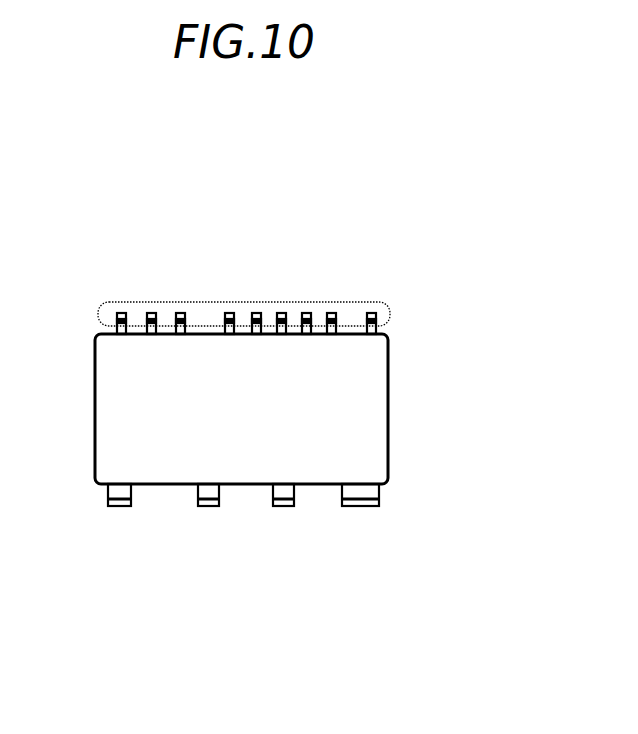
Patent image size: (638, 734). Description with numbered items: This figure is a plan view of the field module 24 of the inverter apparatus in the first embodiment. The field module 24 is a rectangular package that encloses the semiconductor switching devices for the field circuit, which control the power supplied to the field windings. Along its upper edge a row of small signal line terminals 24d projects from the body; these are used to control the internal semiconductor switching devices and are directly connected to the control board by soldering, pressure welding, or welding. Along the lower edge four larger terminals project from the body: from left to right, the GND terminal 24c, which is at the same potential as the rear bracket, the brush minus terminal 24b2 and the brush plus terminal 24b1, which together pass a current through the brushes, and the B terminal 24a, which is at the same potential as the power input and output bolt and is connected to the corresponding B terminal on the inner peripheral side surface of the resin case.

The field module 24 is at (288, 417).
The signal line terminals 24d is at (204, 303).
The GND terminal 24c is at (120, 506).
The brush minus terminal 24b2 is at (209, 506).
The brush plus terminal 24b1 is at (283, 506).
The B terminal 24a is at (360, 506).